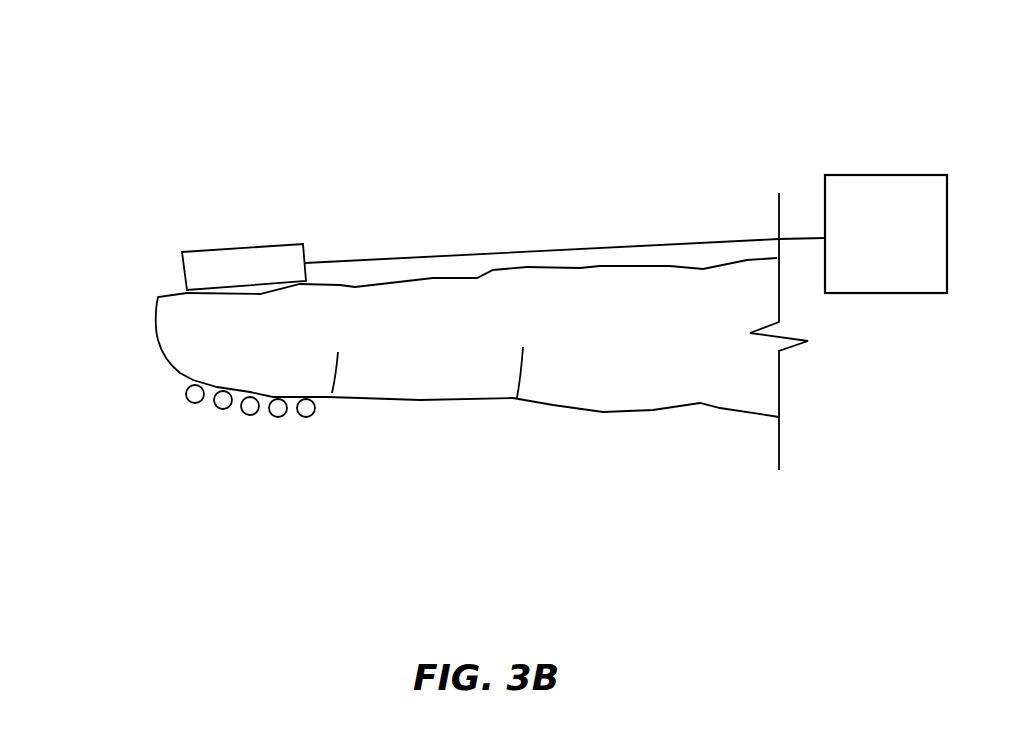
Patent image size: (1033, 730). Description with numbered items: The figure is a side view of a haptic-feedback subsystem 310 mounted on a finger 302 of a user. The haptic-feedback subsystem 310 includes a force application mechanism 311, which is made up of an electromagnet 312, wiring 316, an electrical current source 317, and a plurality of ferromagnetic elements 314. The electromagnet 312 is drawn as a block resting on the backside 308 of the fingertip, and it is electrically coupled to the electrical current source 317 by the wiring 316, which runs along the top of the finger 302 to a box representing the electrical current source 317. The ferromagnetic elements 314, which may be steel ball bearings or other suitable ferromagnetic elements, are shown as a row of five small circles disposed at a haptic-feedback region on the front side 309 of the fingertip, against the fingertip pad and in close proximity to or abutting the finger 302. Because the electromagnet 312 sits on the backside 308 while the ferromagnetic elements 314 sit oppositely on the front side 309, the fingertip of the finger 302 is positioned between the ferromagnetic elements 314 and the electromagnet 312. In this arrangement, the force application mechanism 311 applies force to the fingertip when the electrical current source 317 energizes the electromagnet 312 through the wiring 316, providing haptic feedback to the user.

The finger 302 is at (632, 412).
The backside 308 is at (453, 278).
The front side 309 is at (425, 400).
The haptic-feedback subsystem 310 is at (98, 80).
The force application mechanism 311 is at (835, 110).
The electromagnet 312 is at (232, 247).
The ferromagnetic elements 314 is at (315, 425).
The wiring 316 is at (583, 248).
The electrical current source 317 is at (886, 234).